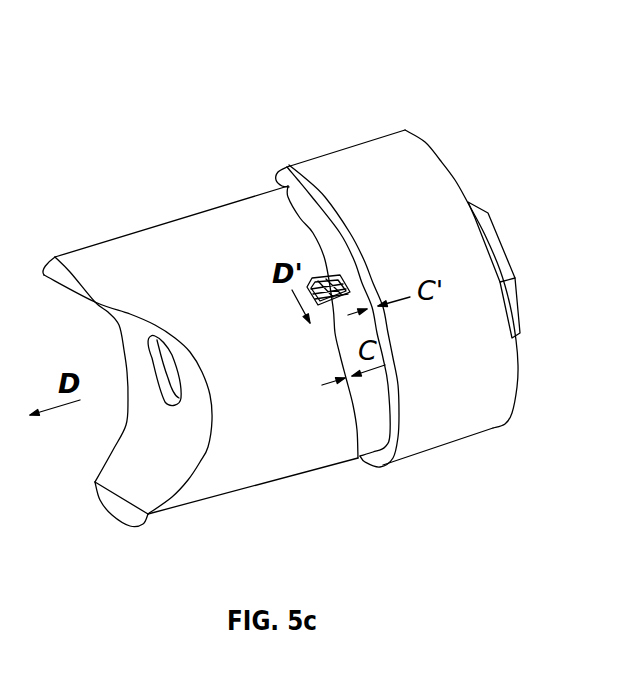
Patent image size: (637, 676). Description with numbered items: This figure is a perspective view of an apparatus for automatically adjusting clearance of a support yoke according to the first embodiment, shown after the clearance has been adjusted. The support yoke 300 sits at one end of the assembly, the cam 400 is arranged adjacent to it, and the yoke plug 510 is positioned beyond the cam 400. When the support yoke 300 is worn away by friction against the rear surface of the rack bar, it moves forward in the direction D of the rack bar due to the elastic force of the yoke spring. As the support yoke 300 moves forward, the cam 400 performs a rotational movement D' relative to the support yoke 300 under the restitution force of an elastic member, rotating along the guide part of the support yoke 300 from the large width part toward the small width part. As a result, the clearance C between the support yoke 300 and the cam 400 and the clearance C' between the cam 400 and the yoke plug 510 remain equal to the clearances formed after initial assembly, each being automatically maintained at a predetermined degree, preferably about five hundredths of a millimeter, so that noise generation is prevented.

The support yoke 300 is at (190, 236).
The cam 400 is at (287, 192).
The yoke plug 510 is at (380, 160).